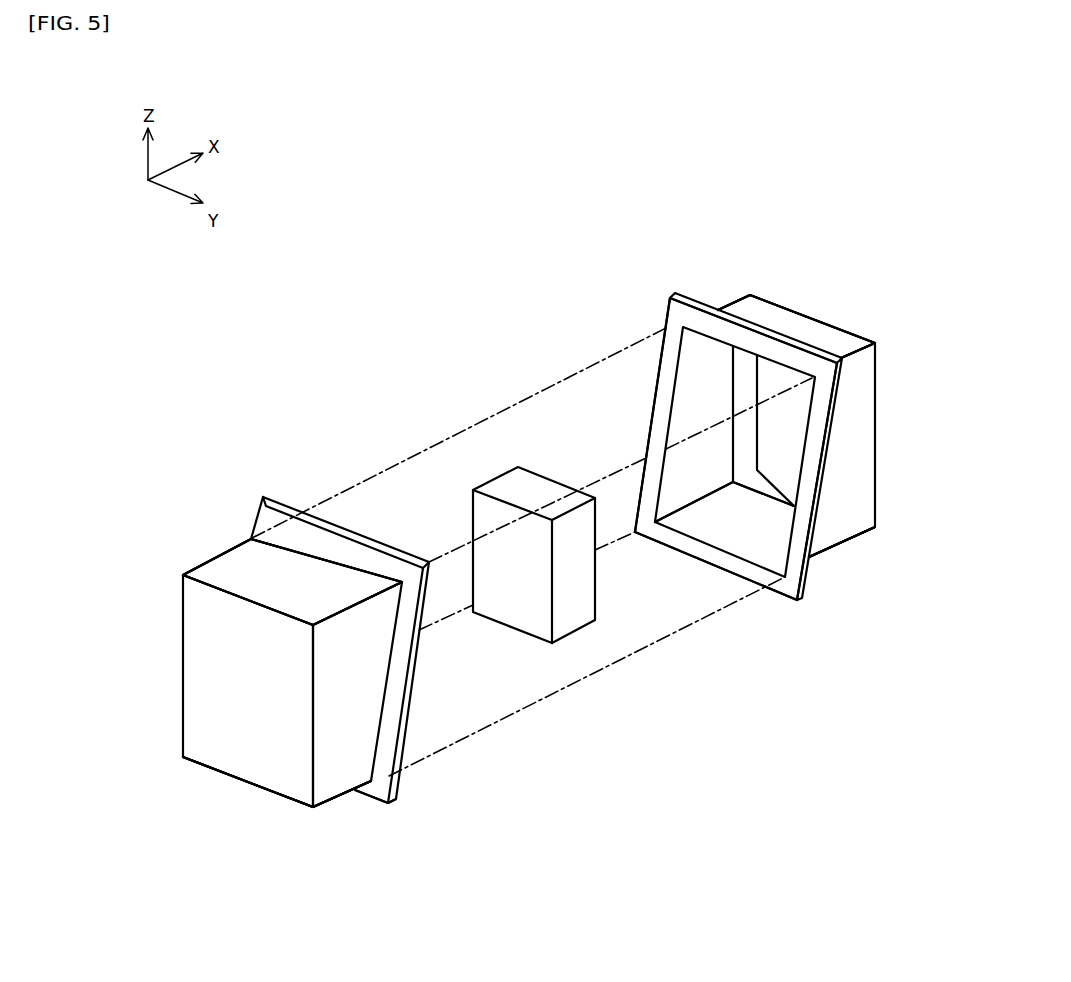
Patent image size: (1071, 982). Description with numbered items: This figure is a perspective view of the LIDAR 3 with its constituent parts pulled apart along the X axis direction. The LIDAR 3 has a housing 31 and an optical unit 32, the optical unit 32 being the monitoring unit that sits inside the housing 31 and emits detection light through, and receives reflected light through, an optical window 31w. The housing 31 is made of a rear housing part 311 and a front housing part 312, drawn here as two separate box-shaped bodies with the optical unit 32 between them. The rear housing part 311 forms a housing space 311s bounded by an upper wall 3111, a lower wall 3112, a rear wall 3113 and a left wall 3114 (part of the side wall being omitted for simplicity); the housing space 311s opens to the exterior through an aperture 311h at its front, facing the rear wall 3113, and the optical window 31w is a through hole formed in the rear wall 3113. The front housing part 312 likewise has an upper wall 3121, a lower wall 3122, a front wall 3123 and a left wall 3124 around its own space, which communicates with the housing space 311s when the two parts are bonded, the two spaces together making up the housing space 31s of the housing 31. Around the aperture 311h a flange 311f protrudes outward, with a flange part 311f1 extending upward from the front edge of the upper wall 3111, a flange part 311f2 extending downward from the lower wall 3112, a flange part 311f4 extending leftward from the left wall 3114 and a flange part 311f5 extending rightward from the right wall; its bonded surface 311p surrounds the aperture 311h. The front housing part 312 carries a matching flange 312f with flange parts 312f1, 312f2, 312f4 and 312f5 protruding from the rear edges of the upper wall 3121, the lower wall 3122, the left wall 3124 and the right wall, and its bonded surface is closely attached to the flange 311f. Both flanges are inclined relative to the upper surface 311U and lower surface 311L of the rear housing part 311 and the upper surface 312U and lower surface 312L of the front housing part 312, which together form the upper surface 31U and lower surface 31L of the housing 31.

The LIDAR 3 is at (520, 195).
The housing 31 is at (250, 356).
The optical unit 32 is at (493, 462).
The rear housing part 311 is at (880, 260).
The front housing part 312 is at (222, 433).
The upper wall 3111 is at (838, 335).
The lower wall 3112 is at (841, 549).
The rear wall 3113 is at (748, 385).
The left wall 3114 is at (865, 437).
The bonded surface 311p is at (666, 320).
The aperture 311h is at (681, 426).
The housing space 311s is at (778, 531).
The housing space 31s is at (724, 502).
The optical window 31w is at (787, 413).
The upper surface 311U is at (803, 325).
The lower surface 311L is at (853, 537).
The upper surface 31U is at (529, 460).
The lower surface 31L is at (529, 667).
The flange 311f is at (722, 447).
The flange part 311f1 is at (703, 330).
The flange part 311f2 is at (705, 557).
The flange part 311f4 is at (810, 482).
The flange part 311f5 is at (657, 397).
The upper wall 3121 is at (233, 583).
The lower wall 3122 is at (228, 775).
The front wall 3123 is at (200, 642).
The left wall 3124 is at (347, 737).
The upper surface 312U is at (243, 568).
The lower surface 312L is at (282, 801).
The flange 312f is at (326, 653).
The flange part 312f1 is at (352, 548).
The flange part 312f2 is at (366, 790).
The flange part 312f4 is at (398, 678).
The flange part 312f5 is at (270, 530).